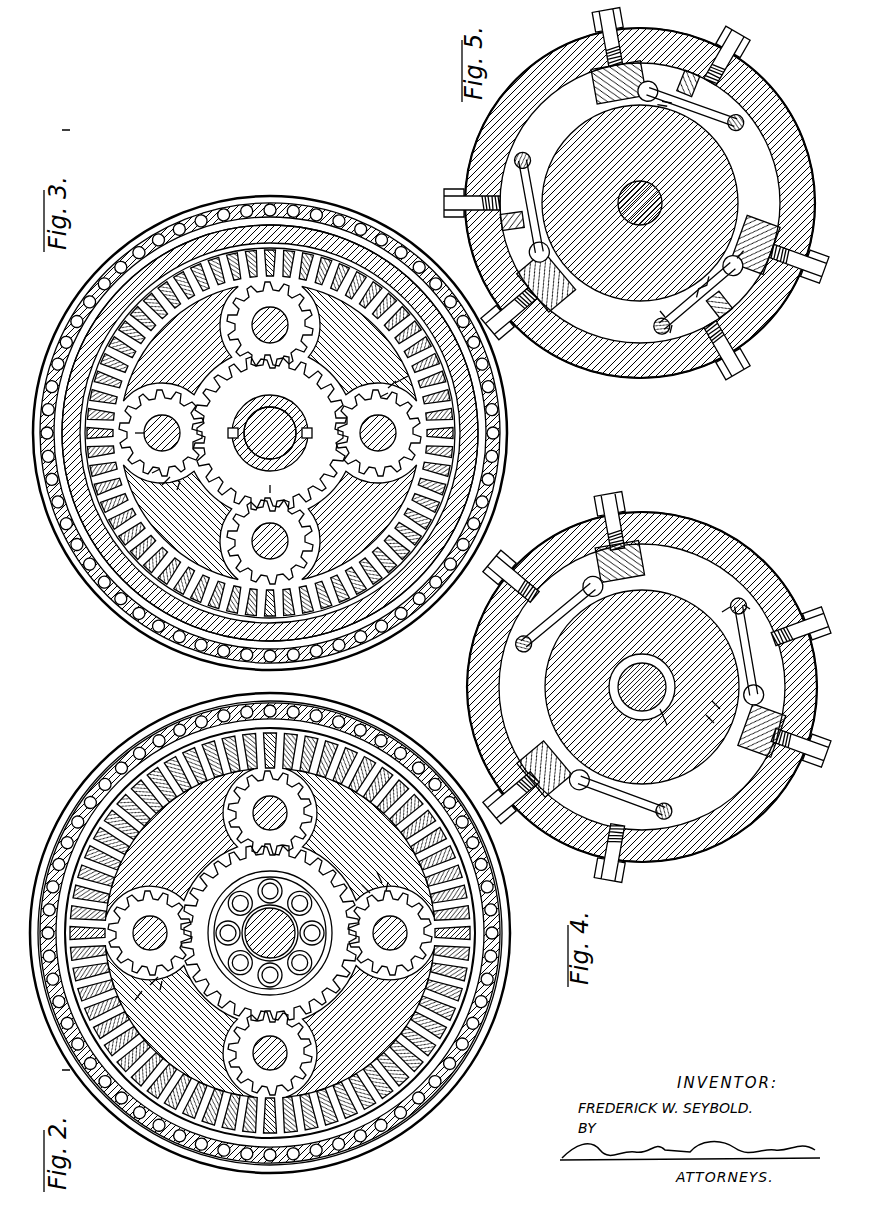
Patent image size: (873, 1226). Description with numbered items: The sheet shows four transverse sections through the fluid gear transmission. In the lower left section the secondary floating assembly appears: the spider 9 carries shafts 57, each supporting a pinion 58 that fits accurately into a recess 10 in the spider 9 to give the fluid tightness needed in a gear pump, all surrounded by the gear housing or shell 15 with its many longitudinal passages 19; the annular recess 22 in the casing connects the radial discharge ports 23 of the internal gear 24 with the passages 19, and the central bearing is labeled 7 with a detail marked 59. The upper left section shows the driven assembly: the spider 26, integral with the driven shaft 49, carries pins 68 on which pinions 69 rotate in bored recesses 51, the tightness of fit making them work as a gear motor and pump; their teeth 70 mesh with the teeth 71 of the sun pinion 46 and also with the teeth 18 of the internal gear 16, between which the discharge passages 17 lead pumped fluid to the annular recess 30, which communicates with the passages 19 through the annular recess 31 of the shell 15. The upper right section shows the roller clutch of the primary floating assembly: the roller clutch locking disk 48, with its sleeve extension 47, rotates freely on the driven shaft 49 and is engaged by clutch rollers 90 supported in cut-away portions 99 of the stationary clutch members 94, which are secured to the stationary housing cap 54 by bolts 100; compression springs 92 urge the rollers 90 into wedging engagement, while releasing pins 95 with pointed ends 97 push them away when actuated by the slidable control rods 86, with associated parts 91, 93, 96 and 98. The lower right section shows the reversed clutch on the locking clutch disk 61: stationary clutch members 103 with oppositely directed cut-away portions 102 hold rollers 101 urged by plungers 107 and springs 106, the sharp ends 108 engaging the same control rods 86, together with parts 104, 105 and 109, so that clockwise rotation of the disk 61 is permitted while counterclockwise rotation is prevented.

In FIG. 2, the shaft with ball bearing 7 is at (270, 933).
In FIG. 2, the spider 9 is at (270, 933).
In FIG. 2, the recess 10 is at (270, 933).
In FIG. 3, the gear housing or shell 15 is at (270, 432).
In FIG. 2, the gear housing or shell 15 is at (270, 933).
In FIG. 3, the internal gear 16 is at (270, 433).
In FIG. 3, the discharge passages 17 is at (269, 418).
In FIG. 3, the teeth 18 is at (129, 431).
In FIG. 3, the longitudinal passages 19 is at (269, 433).
In FIG. 2, the longitudinal passages 19 is at (269, 932).
In FIG. 2, the annular recess 22 is at (270, 940).
In FIG. 2, the discharge ports 23 is at (277, 933).
In FIG. 3, the internal gear 24 is at (270, 418).
In FIG. 2, the internal gear 24 is at (270, 933).
In FIG. 3, the spider 26 is at (269, 432).
In FIG. 3, the annular recess 30 is at (270, 407).
In FIG. 3, the annular recess 31 is at (270, 409).
In FIG. 3, the sun pinion 46 is at (256, 475).
In FIG. 3, the sleeve extension 47 is at (270, 433).
In FIG. 4, the sleeve extension 47 is at (628, 687).
In FIG. 5, the roller clutch locking disk 48 is at (640, 218).
In FIG. 3, the driven shaft 49 is at (270, 433).
In FIG. 5, the driven shaft 49 is at (624, 203).
In FIG. 4, the driven shaft 49 is at (663, 722).
In FIG. 3, the bored recesses 51 is at (270, 433).
In FIG. 5, the stationary housing cap 54 is at (640, 214).
In FIG. 4, the stationary housing cap 54 is at (642, 679).
In FIG. 2, the shafts 57 is at (253, 933).
In FIG. 2, the pinion 58 is at (252, 934).
In FIG. 2, the retainer 59 is at (270, 934).
In FIG. 4, the locking clutch disk 61 is at (642, 677).
In FIG. 3, the pins 68 is at (263, 434).
In FIG. 3, the pinions 69 is at (275, 433).
In FIG. 3, the teeth 70 is at (288, 431).
In FIG. 3, the teeth 71 is at (275, 443).
In FIG. 5, the control rods 86 is at (626, 231).
In FIG. 4, the control rods 86 is at (625, 696).
In FIG. 5, the clutch rollers 90 is at (637, 180).
In FIG. 5, the lever 91 is at (622, 213).
In FIG. 5, the compression springs 92 is at (726, 228).
In FIG. 5, the spring 93 is at (731, 250).
In FIG. 5, the stationary clutch members 94 is at (626, 195).
In FIG. 5, the releasing pins 95 is at (605, 195).
In FIG. 5, the spring 96 is at (677, 191).
In FIG. 5, the pointed ends 97 is at (656, 310).
In FIG. 5, the stop 98 is at (668, 328).
In FIG. 5, the cut-away portions 99 is at (637, 177).
In FIG. 5, the bolts 100 is at (626, 196).
In FIG. 4, the rollers 101 is at (665, 683).
In FIG. 4, the cut-away portions 102 is at (657, 684).
In FIG. 4, the stationary clutch members 103 is at (648, 668).
In FIG. 4, the bolt 104 is at (619, 681).
In FIG. 4, the spring seat 105 is at (712, 704).
In FIG. 4, the springs 106 is at (707, 718).
In FIG. 4, the plungers 107 is at (635, 705).
In FIG. 4, the sharp ends 108 is at (717, 610).
In FIG. 4, the roller 109 is at (747, 610).